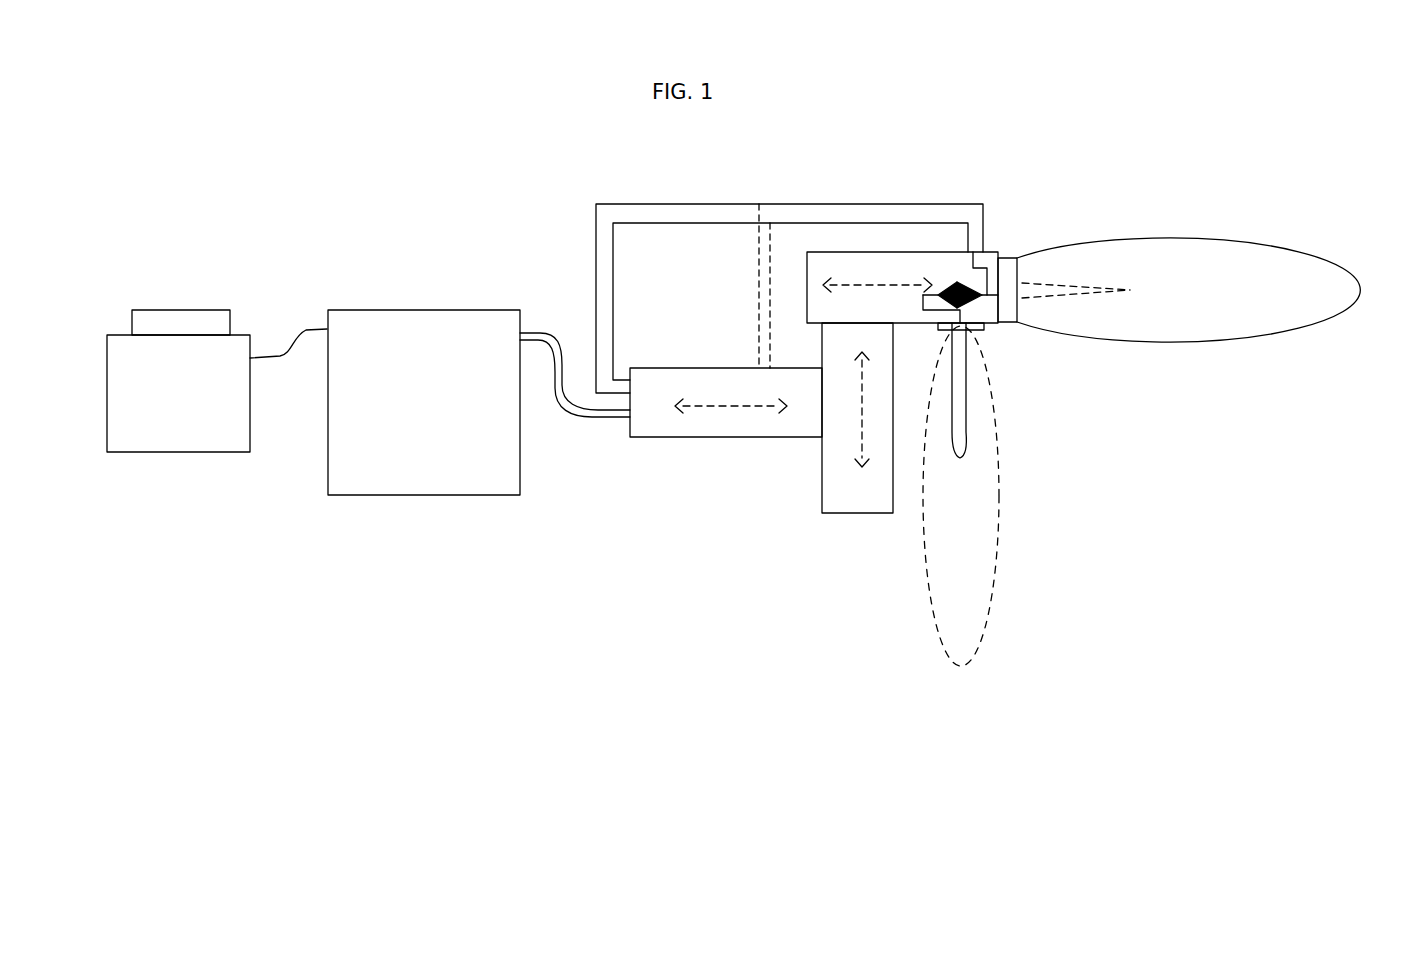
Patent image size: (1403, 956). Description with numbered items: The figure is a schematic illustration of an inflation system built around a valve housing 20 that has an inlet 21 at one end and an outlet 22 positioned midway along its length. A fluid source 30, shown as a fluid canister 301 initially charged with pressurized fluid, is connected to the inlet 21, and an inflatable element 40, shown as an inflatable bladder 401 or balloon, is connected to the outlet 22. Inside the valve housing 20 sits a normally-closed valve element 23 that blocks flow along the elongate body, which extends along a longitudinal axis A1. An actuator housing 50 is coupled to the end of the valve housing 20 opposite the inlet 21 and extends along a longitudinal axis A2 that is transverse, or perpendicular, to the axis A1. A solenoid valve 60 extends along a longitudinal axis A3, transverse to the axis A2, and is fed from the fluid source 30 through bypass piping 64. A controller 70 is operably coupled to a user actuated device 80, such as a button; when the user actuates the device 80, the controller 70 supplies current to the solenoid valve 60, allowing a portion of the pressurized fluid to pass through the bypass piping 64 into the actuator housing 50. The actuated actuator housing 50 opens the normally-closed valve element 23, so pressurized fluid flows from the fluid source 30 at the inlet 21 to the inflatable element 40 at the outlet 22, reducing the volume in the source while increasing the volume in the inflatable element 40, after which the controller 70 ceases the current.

The valve housing 20 is at (823, 263).
The inlet 21 is at (1008, 258).
The outlet 22 is at (980, 329).
The normally-closed valve element 23 is at (937, 287).
The fluid source 30 is at (1218, 342).
The fluid canister 301 is at (1170, 333).
The inflatable element 40 is at (967, 405).
The inflatable bladder 401 is at (963, 420).
The actuator housing 50 is at (820, 507).
The solenoid valve 60 is at (635, 441).
The bypass piping 64 is at (759, 282).
The controller 70 is at (337, 495).
The user actuated device 80 is at (120, 452).
The longitudinal axis A1 is at (872, 282).
The longitudinal axis A2 is at (858, 445).
The longitudinal axis A3 is at (728, 408).